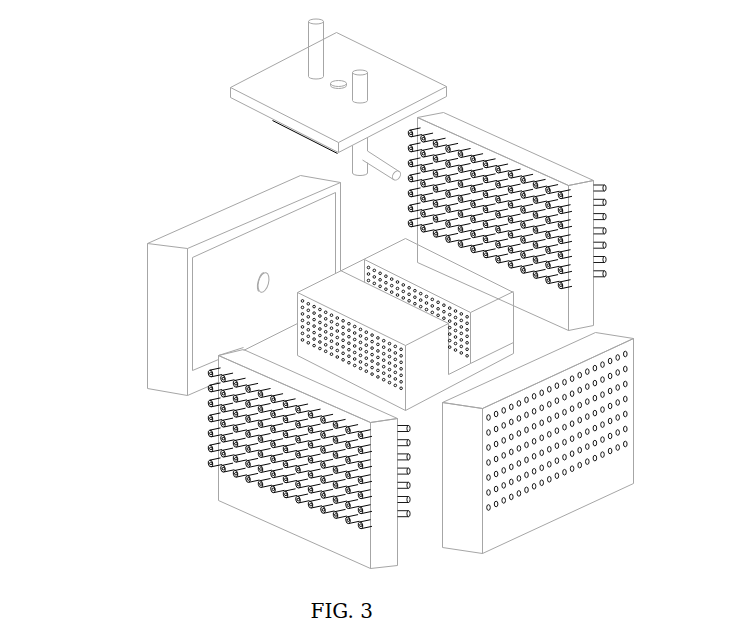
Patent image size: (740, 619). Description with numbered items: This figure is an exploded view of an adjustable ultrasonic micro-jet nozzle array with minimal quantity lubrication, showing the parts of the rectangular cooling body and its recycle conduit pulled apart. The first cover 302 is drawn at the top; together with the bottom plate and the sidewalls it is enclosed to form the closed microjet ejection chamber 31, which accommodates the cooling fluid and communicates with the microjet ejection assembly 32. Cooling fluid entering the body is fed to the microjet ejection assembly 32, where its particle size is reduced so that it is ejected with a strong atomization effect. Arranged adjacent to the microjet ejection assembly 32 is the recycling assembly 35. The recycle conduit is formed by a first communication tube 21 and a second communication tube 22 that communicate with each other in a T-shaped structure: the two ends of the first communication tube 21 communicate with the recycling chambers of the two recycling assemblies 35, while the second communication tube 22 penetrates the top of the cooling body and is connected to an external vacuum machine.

The first cover 302 is at (284, 77).
The second communication tube 22 is at (358, 83).
The first communication tube 21 is at (385, 168).
The microjet ejection chamber 31 is at (340, 260).
The recycling assembly 35 is at (205, 298).
The microjet ejection assembly 32 is at (275, 506).